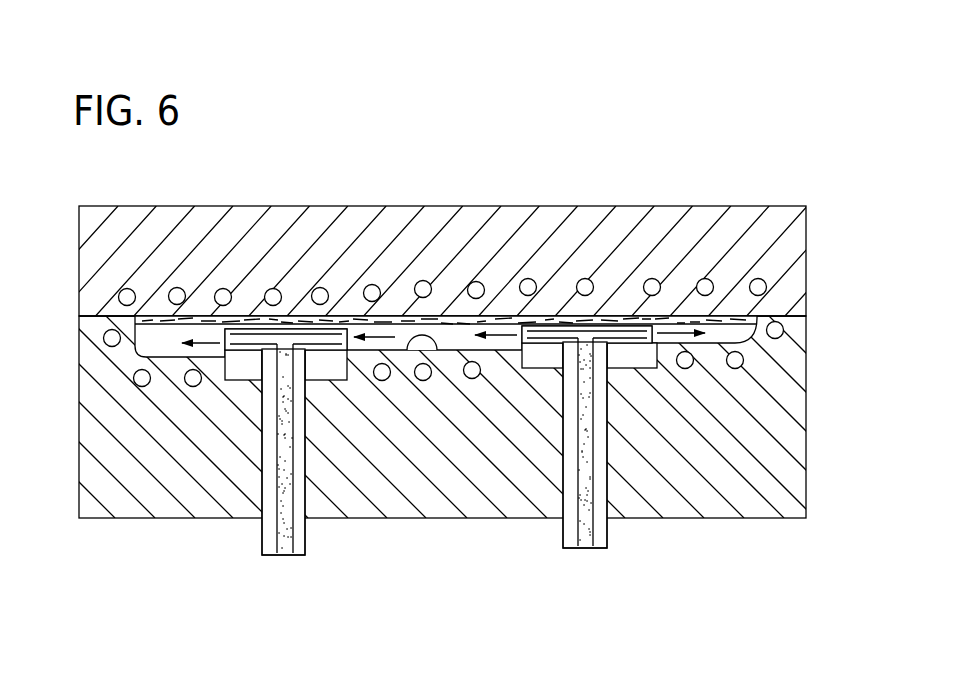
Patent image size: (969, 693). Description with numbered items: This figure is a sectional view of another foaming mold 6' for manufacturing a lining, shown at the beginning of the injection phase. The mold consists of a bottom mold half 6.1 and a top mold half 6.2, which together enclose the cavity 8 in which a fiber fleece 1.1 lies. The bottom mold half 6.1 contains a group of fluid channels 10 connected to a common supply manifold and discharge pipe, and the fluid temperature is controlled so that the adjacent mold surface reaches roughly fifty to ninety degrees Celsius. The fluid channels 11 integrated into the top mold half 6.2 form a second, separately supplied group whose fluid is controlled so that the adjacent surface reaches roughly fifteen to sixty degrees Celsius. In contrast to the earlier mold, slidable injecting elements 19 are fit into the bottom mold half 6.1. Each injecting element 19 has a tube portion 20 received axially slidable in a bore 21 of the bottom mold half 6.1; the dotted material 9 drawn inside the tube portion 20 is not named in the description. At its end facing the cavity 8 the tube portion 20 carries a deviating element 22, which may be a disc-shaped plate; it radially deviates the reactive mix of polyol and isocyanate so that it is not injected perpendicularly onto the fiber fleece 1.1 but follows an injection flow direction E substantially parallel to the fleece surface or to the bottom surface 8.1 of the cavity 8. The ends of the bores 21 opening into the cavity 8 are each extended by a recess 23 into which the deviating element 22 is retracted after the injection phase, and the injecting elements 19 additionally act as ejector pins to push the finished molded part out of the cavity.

The foaming mold 6' is at (722, 134).
The bottom mold half 6.1 is at (763, 503).
The top mold half 6.2 is at (761, 212).
The fiber fleece 1.1 is at (667, 316).
The cavity 8 is at (153, 343).
The bottom surface of the cavity 8.1 is at (407, 350).
The core of T-profile 9 is at (282, 520).
The fluid channels 10 is at (141, 388).
The fluid channels 11 is at (472, 282).
The injecting elements 19 is at (277, 570).
The tube portion 20 is at (301, 533).
The bore 21 is at (258, 483).
The deviating element 22 is at (563, 322).
The recess 23 is at (330, 372).
The injection flow direction E is at (203, 340).